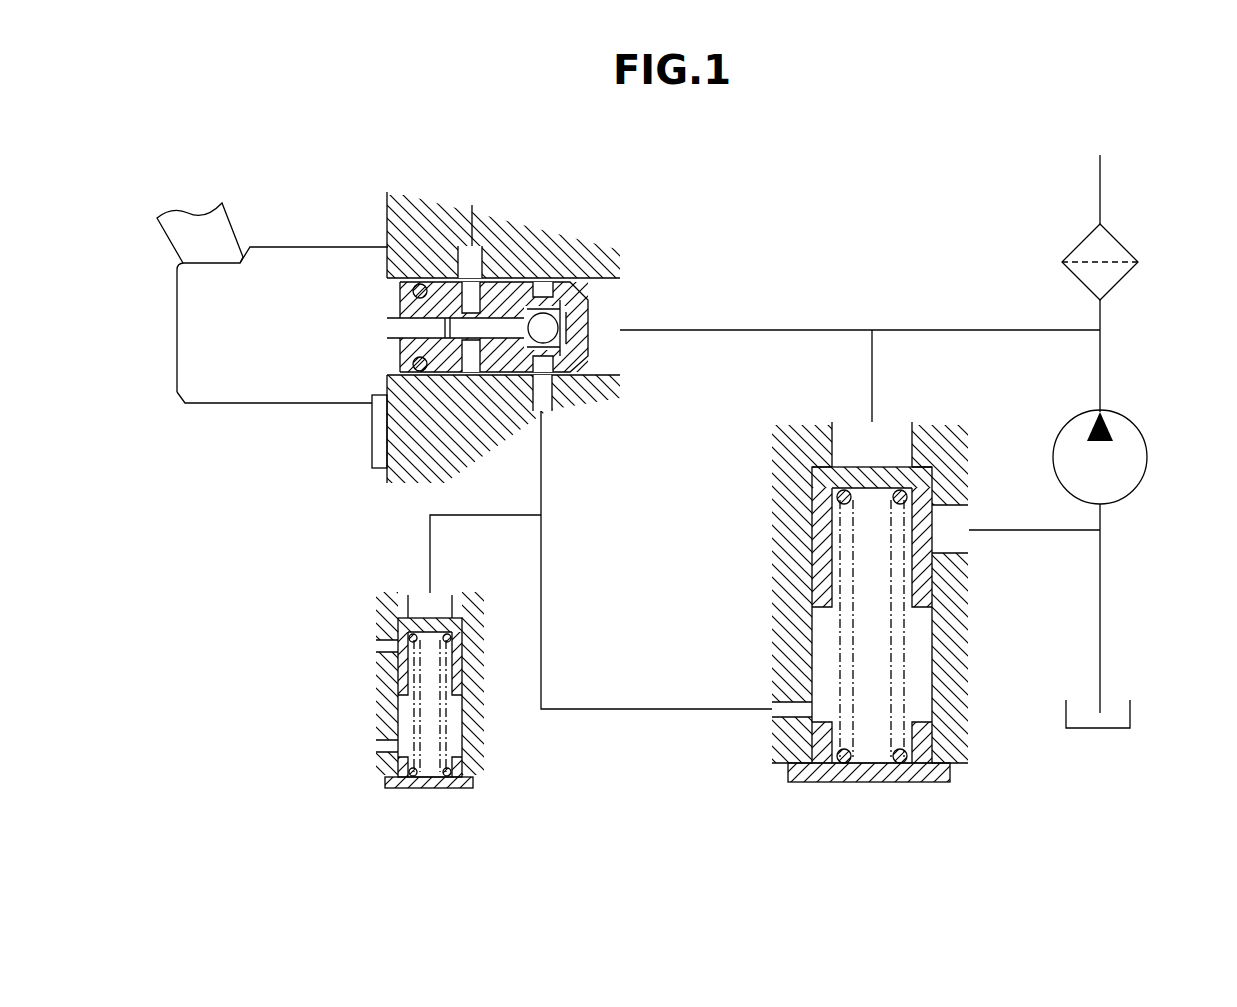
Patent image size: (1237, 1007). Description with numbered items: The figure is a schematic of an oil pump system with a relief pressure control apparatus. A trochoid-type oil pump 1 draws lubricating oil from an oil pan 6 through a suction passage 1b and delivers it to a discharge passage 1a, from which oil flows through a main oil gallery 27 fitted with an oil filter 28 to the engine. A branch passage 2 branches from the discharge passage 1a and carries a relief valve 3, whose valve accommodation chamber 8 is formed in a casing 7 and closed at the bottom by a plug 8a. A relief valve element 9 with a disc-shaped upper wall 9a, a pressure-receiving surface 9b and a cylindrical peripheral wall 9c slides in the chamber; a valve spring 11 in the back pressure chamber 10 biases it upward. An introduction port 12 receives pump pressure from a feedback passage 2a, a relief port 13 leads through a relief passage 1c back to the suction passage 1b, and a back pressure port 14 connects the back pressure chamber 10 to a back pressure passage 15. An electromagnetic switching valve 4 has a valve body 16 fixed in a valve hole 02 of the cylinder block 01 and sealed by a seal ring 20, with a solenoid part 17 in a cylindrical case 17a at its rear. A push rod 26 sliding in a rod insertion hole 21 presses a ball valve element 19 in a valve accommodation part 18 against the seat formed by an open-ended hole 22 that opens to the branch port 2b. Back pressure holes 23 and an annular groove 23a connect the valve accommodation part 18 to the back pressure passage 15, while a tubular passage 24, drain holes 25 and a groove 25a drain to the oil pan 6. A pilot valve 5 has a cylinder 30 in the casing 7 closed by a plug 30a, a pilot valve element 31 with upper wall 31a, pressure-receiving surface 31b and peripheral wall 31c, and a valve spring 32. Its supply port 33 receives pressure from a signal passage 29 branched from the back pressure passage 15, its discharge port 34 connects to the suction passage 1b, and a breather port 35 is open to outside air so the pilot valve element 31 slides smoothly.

The oil pump 1 is at (1149, 455).
The discharge passage 1a is at (1104, 370).
The suction passage 1b is at (1104, 588).
The relief passage 1c is at (1042, 532).
The branch passage 2 is at (982, 328).
The feedback passage 2a is at (874, 368).
The branch port 2b is at (681, 332).
The relief valve 3 is at (950, 628).
The electromagnetic switching valve 4 is at (352, 220).
The pilot valve 5 is at (478, 660).
The oil pan 6 is at (1108, 731).
The casing 7 is at (950, 698).
The valve accommodation chamber 8 is at (822, 652).
The plug 8a is at (890, 783).
The relief valve element 9 is at (815, 520).
The upper wall 9a is at (805, 462).
The pressure-receiving surface 9b is at (866, 466).
The peripheral wall 9c is at (815, 582).
The back pressure chamber 10 is at (945, 714).
The valve spring 11 is at (905, 676).
The introduction port 12 is at (945, 442).
The relief port 13 is at (962, 504).
The back pressure port 14 is at (775, 735).
The back pressure passage 15 is at (544, 560).
The valve body 16 is at (513, 388).
The solenoid part 17 is at (295, 258).
The cylindrical case 17a is at (265, 405).
The valve accommodation part 18 is at (572, 277).
The ball valve element 19 is at (588, 392).
The seal ring 20 is at (433, 405).
The rod insertion hole 21 is at (421, 280).
The open-ended hole 22 is at (596, 320).
The back pressure holes 23 is at (555, 388).
The annular groove 23a is at (545, 275).
The tubular passage 24 is at (483, 378).
The drain holes 25 is at (487, 280).
The groove 25a is at (464, 262).
The push rod 26 is at (462, 390).
The main oil gallery 27 is at (1103, 188).
The oil filter 28 is at (1127, 250).
The signal passage 29 is at (489, 514).
The cylinder 30 is at (456, 740).
The plug 30a is at (421, 789).
The pilot valve element 31 is at (462, 690).
The upper wall 31a is at (396, 616).
The pressure-receiving surface 31b is at (425, 605).
The peripheral wall 31c is at (392, 680).
The valve spring 32 is at (412, 716).
The supply port 33 is at (448, 605).
The discharge port 34 is at (386, 652).
The breather port 35 is at (380, 760).
The cylinder block 01 is at (402, 205).
The valve hole 02 is at (522, 268).